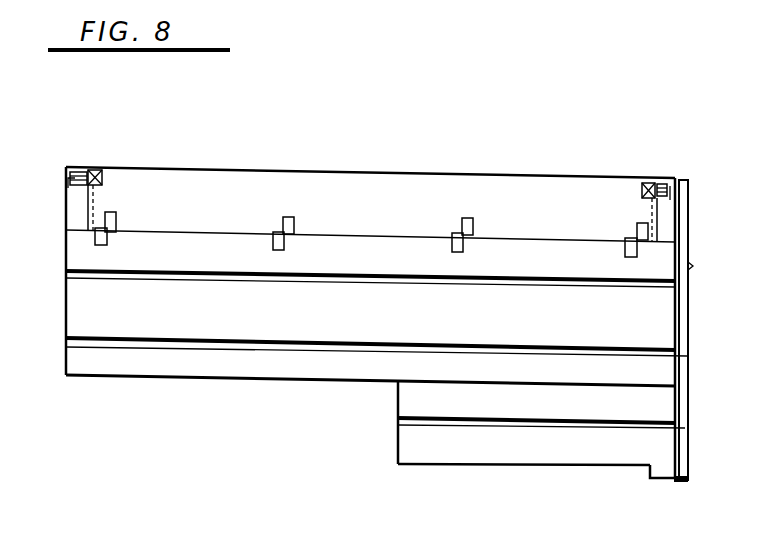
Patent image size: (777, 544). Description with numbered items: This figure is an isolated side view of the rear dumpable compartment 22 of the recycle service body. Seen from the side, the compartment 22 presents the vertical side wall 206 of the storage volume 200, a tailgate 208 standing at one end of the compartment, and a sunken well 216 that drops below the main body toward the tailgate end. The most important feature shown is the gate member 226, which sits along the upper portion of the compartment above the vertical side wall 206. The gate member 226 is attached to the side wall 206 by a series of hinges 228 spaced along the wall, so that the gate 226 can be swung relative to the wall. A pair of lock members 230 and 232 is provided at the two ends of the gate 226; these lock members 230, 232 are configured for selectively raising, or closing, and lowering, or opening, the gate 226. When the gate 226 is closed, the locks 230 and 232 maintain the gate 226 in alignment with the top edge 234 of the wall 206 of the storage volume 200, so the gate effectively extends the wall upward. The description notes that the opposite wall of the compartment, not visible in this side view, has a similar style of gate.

The rear dumpable compartment 22 is at (514, 157).
The storage volume 200 is at (370, 171).
The vertical side wall 206 is at (400, 320).
The tailgate 208 is at (688, 327).
The sunken well 216 is at (555, 445).
The gate member 226 is at (405, 212).
The hinges 228 is at (283, 227).
The lock member 230 is at (658, 182).
The lock member 232 is at (105, 167).
The top edge 234 is at (79, 166).